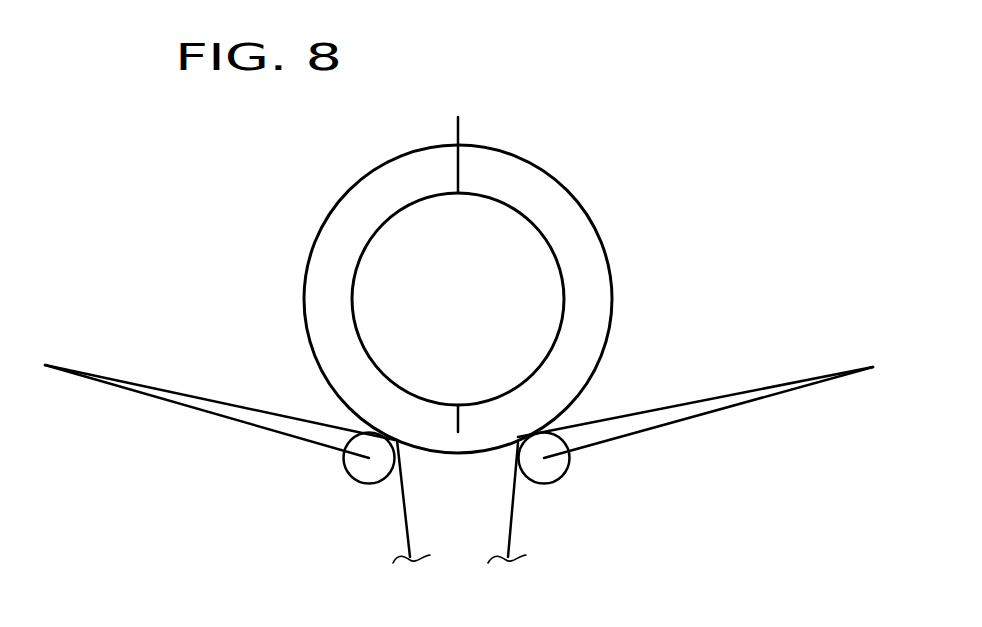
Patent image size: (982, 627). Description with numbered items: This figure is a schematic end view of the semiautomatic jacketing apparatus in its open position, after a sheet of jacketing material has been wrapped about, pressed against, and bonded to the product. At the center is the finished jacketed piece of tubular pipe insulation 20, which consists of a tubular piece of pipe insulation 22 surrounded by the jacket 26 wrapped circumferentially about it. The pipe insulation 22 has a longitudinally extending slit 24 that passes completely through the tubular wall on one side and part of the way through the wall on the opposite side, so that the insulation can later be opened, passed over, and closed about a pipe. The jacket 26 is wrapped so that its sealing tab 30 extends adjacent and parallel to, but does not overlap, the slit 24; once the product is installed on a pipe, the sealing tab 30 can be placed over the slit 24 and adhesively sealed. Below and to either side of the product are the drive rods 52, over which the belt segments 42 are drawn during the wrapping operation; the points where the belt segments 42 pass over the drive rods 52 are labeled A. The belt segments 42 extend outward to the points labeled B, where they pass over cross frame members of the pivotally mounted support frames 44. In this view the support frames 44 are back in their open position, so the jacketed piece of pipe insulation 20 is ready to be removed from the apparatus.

The jacketed piece of tubular pipe insulation 20 is at (502, 278).
The tubular piece of pipe insulation 22 is at (575, 283).
The longitudinally extending slit 24 is at (458, 162).
The jacket 26 is at (608, 253).
The sealing tab 30 is at (462, 128).
The belt segments 42 is at (230, 345).
The pivotally mounted support frames 44 is at (195, 405).
The drive rods 52 is at (372, 470).
The points where belt segments pass over drive rods A is at (515, 443).
The points where belt segments pass over second cross frame members B is at (45, 365).